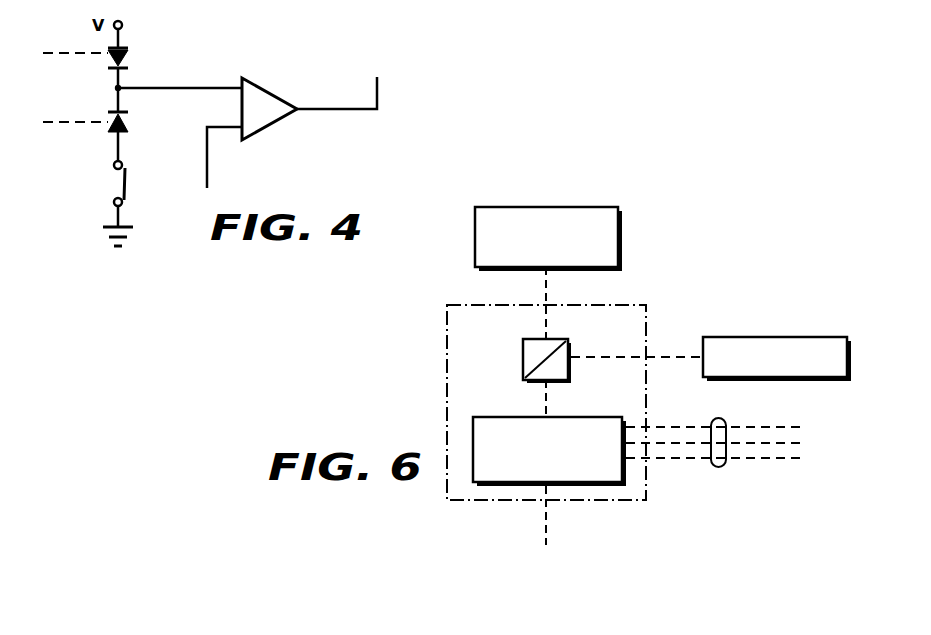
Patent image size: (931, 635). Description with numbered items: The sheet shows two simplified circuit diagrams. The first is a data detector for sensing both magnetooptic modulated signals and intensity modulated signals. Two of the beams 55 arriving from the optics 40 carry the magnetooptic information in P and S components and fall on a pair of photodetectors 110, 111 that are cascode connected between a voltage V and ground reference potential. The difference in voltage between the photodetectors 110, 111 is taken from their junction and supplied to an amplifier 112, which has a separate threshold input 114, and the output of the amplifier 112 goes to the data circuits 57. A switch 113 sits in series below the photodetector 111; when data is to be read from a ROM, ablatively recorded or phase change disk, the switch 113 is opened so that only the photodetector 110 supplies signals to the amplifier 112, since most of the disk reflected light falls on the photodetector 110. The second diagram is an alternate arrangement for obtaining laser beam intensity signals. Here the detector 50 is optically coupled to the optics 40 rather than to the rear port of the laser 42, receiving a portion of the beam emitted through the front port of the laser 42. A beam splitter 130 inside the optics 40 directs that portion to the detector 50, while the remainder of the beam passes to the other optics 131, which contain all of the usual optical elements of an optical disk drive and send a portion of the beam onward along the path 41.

In FIG. 4, the beams 55 is at (86, 55).
In FIG. 6, the beams 55 is at (718, 467).
In FIG. 4, the data circuits 57 is at (380, 71).
In FIG. 4, the photodetector 110 is at (128, 50).
In FIG. 4, the photodetector 111 is at (128, 124).
In FIG. 4, the amplifier 112 is at (262, 86).
In FIG. 4, the switch 113 is at (124, 182).
In FIG. 4, the threshold input 114 is at (207, 182).
In FIG. 6, the optics 40 is at (607, 305).
In FIG. 6, the path 41 is at (548, 540).
In FIG. 6, the laser 42 is at (583, 207).
In FIG. 6, the detector 50 is at (785, 337).
In FIG. 6, the beam splitter 130 is at (530, 338).
In FIG. 6, the other optics 131 is at (586, 410).